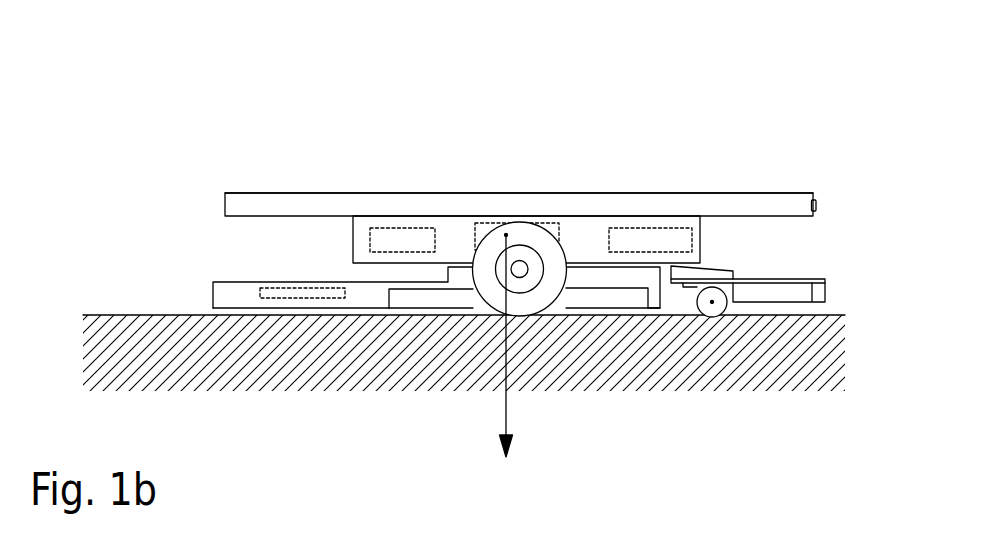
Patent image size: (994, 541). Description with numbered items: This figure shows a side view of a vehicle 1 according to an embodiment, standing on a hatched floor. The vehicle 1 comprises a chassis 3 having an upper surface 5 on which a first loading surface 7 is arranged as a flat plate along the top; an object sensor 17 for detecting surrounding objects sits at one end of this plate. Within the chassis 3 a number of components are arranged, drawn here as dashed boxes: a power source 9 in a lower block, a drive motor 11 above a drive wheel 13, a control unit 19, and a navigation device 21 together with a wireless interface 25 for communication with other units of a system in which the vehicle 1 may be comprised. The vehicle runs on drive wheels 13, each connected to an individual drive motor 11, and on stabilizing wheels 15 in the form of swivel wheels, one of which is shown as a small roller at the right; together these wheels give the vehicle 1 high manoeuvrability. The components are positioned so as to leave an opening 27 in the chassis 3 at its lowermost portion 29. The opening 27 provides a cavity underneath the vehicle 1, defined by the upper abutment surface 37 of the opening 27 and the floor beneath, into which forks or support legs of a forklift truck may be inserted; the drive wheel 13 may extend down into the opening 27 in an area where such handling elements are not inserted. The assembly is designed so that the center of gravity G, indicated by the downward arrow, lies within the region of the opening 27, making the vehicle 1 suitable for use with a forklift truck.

The vehicle 1 is at (313, 115).
The chassis 3 is at (175, 237).
The upper surface 5 is at (625, 192).
The first loading surface 7 is at (550, 192).
The power source 9 is at (270, 297).
The drive motor 11 is at (475, 223).
The drive wheel 13 is at (549, 292).
The stabilizing wheel 15 is at (243, 313).
The object sensor 17 is at (816, 207).
The control unit 19 is at (380, 243).
The navigation device 21 is at (679, 238).
The wireless interface 25 is at (760, 257).
The opening 27 is at (452, 298).
The lowermost portion 29 is at (382, 309).
The upper abutment surface 37 is at (623, 289).
The center of gravity G is at (506, 383).